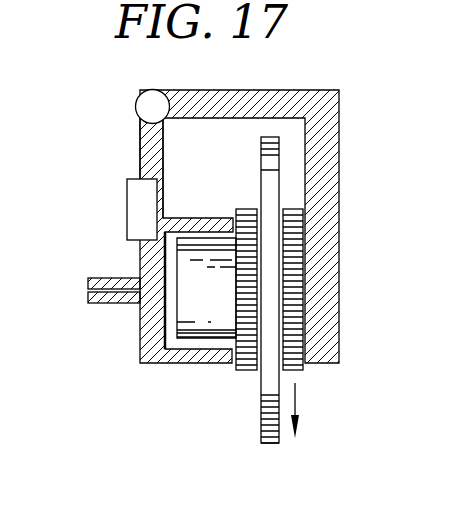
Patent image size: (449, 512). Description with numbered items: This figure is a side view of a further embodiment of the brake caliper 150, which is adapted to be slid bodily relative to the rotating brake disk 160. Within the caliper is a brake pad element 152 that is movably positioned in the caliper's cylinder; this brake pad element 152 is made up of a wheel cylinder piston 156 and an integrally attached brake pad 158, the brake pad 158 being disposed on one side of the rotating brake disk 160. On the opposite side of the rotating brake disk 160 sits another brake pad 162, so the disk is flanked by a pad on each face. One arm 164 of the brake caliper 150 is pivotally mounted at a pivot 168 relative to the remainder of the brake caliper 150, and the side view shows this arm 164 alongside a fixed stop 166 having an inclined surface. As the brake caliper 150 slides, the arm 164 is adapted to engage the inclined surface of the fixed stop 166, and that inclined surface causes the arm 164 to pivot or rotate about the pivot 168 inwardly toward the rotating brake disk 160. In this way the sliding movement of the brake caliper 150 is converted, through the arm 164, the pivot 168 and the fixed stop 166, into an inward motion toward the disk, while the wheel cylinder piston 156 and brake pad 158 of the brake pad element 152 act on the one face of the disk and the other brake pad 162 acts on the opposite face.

The brake caliper 150 is at (352, 247).
The brake pad element 152 is at (160, 320).
The wheel cylinder piston 156 is at (190, 332).
The brake pad 158 is at (243, 372).
The rotating brake disk 160 is at (270, 445).
The brake pad 162 is at (297, 372).
The arm 164 is at (141, 160).
The fixed stop 166 is at (127, 204).
The pivot 168 is at (147, 104).